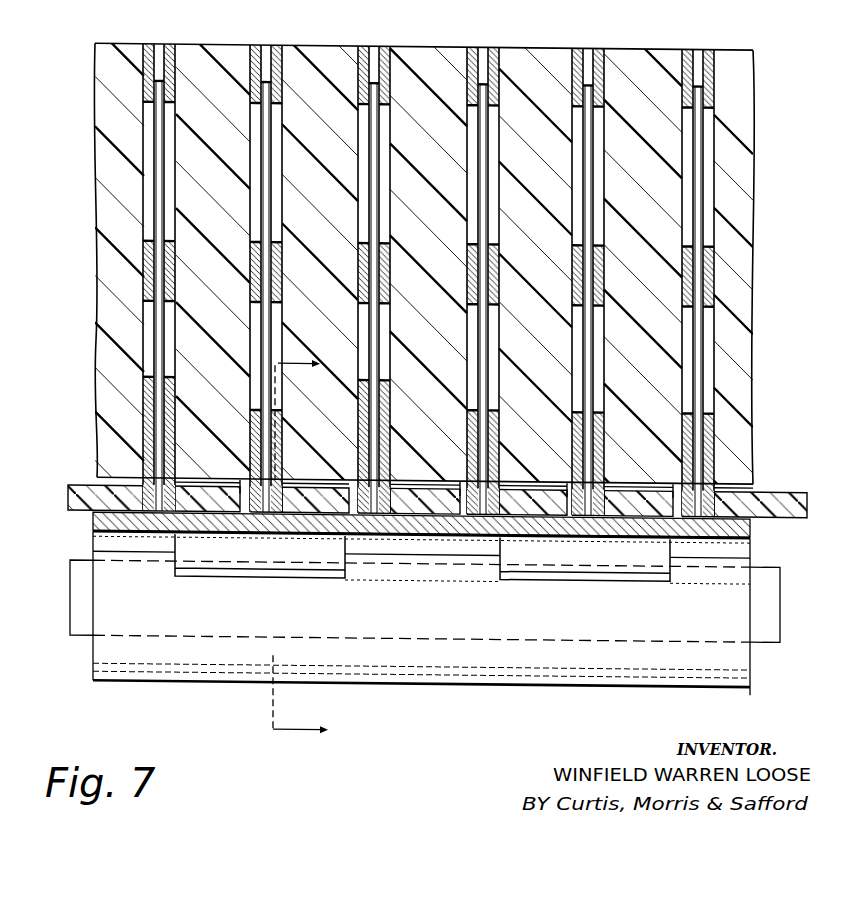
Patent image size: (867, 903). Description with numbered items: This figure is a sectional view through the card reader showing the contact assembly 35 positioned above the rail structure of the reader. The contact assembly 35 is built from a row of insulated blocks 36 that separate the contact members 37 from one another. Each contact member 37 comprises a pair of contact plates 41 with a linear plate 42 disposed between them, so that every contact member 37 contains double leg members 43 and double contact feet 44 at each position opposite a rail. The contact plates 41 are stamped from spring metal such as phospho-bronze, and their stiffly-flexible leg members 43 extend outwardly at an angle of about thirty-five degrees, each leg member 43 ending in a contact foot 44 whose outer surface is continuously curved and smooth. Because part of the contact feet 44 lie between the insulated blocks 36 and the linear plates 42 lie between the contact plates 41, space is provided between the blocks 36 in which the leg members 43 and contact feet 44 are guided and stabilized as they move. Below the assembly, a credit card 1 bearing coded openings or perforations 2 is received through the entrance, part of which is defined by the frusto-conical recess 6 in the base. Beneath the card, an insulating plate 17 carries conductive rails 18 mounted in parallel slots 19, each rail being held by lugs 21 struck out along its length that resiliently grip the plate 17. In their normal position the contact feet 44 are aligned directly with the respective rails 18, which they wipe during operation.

The credit card 1 is at (75, 497).
The openings or perforations 2 is at (240, 484).
The frusto-conical recess 6 is at (308, 548).
The insulating plate 17 is at (85, 560).
The conductive rails 18 is at (100, 661).
The parallel slots 19 is at (80, 593).
The lugs 21 is at (268, 558).
The contact assembly 35 is at (84, 143).
The insulated blocks 36 is at (300, 58).
The contact members 37 is at (170, 33).
The contact plates 41 is at (152, 89).
The linear plate 42 is at (160, 57).
The leg members 43 is at (150, 232).
The contact feet 44 is at (167, 451).